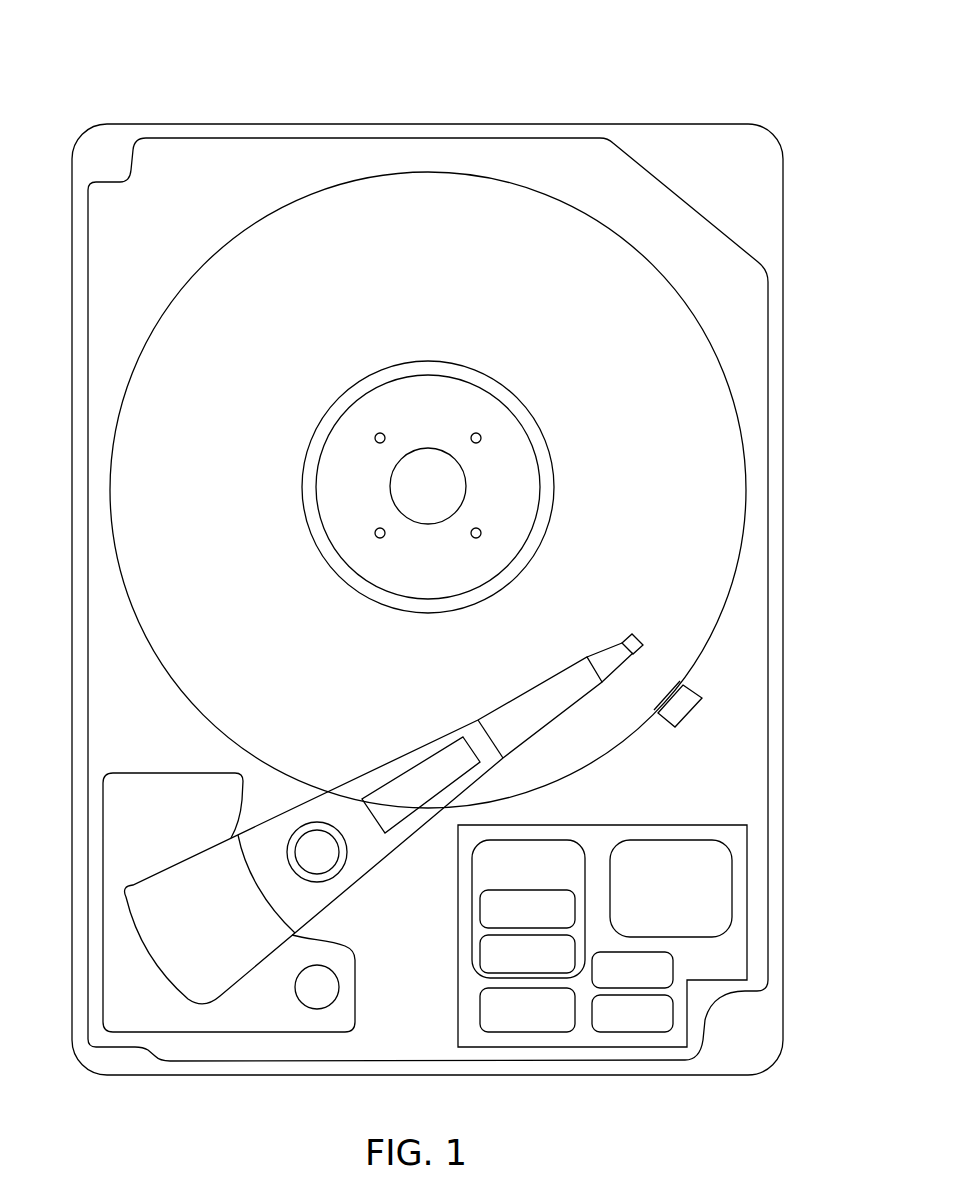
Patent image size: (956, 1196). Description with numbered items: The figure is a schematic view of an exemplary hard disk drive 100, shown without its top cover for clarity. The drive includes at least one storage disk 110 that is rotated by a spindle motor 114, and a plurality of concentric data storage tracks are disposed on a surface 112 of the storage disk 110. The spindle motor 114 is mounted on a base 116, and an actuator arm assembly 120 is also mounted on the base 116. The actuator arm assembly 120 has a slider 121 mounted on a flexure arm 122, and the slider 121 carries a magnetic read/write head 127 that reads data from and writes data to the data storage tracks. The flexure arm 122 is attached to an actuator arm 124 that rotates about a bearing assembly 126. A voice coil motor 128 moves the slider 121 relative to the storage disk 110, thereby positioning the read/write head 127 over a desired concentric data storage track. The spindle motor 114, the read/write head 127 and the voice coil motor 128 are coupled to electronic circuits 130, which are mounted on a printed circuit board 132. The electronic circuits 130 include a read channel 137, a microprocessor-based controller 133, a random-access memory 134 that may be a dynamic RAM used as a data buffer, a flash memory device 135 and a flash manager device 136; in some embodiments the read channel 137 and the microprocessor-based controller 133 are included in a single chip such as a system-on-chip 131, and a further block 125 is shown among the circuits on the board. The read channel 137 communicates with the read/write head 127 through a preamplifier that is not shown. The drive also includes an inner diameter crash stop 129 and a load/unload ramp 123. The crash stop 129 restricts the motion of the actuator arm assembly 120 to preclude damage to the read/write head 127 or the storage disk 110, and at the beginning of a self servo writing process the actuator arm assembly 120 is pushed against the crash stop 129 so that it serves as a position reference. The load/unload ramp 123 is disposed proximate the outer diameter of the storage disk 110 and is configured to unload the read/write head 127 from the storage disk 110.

The hard disk drive 100 is at (160, 78).
The storage disk 110 is at (203, 262).
The surface 112 is at (428, 490).
The spindle motor 114 is at (523, 428).
The base 116 is at (770, 625).
The actuator arm assembly 120 is at (422, 737).
The slider 121 is at (642, 640).
The flexure arm 122 is at (603, 648).
The load/unload ramp 123 is at (690, 715).
The actuator arm 124 is at (500, 705).
The controller 125 is at (527, 1010).
The bearing assembly 126 is at (345, 897).
The magnetic read/write head 127 is at (630, 606).
The voice coil motor 128 is at (355, 973).
The inner diameter (ID) crash stop 129 is at (318, 1009).
The electronic circuits 130 is at (606, 892).
The system-on-chip 131 is at (528, 909).
The printed circuit board 132 is at (683, 823).
The microprocessor-based controller 133 is at (527, 909).
The random-access memory (RAM) 134 is at (632, 970).
The flash memory device 135 is at (671, 888).
The flash manager device 136 is at (632, 1013).
The read channel 137 is at (527, 954).